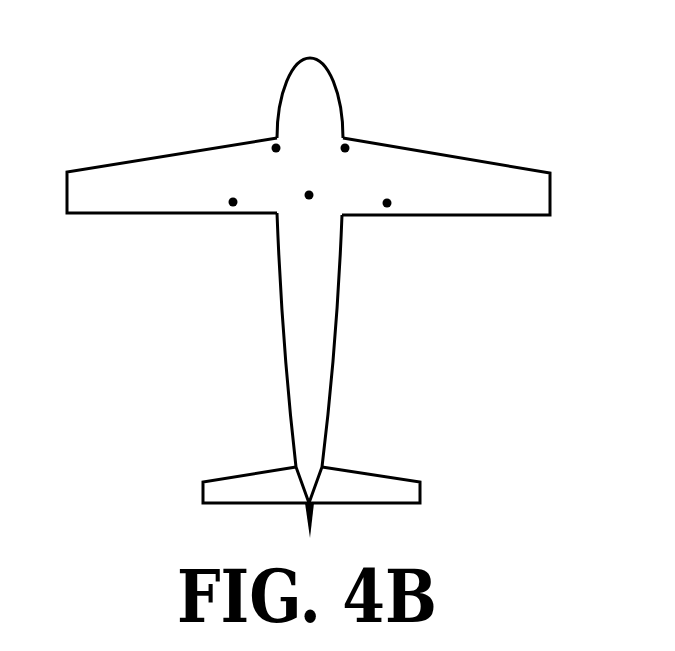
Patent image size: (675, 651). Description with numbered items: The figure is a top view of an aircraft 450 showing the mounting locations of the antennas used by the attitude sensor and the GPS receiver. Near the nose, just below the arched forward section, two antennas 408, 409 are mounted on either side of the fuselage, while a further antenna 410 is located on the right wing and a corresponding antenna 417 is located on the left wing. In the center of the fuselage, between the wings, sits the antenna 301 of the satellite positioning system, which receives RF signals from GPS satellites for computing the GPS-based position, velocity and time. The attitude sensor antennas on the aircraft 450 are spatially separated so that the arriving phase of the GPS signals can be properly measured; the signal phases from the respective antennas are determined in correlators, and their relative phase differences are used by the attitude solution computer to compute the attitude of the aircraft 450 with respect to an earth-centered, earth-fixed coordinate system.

The aircraft 450 is at (258, 61).
The antenna 408 is at (274, 140).
The antenna 409 is at (347, 141).
The left wing sensor point 417 is at (233, 210).
The antenna 410 is at (388, 211).
The antenna 301 is at (310, 203).